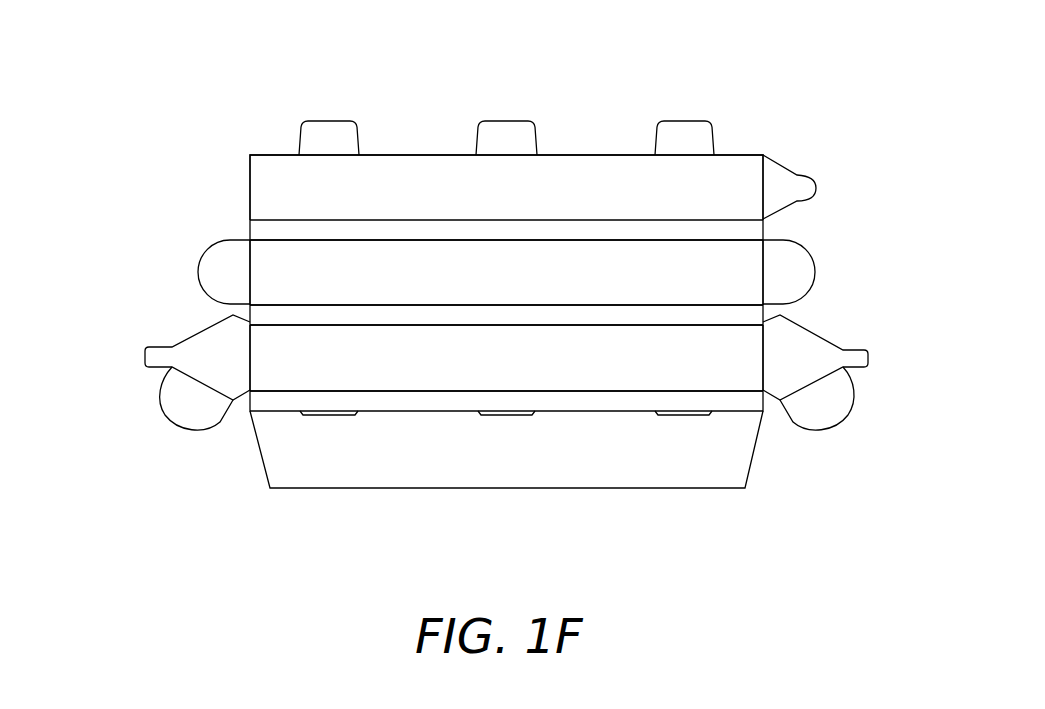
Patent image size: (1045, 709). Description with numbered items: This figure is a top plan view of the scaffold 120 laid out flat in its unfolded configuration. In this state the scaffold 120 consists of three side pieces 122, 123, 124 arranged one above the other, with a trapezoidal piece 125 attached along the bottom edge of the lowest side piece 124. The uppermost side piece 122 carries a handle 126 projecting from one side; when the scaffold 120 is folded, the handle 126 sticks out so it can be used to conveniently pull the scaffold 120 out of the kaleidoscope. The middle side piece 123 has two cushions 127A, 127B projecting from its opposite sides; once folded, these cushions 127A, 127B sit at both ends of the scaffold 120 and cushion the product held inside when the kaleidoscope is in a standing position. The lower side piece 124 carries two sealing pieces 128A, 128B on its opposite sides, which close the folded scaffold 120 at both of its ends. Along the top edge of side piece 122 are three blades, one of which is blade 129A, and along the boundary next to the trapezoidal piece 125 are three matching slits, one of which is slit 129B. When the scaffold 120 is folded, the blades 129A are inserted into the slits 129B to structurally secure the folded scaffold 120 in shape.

The scaffold 120 is at (203, 113).
The side piece 122 is at (258, 194).
The side piece 123 is at (260, 288).
The side piece 124 is at (265, 352).
The trapezoidal piece 125 is at (635, 489).
The handle 126 is at (800, 174).
The cushion 127A is at (207, 245).
The cushion 127B is at (815, 268).
The sealing piece 128A is at (168, 413).
The sealing piece 128B is at (828, 337).
The blade 129A is at (332, 120).
The slit 129B is at (327, 413).